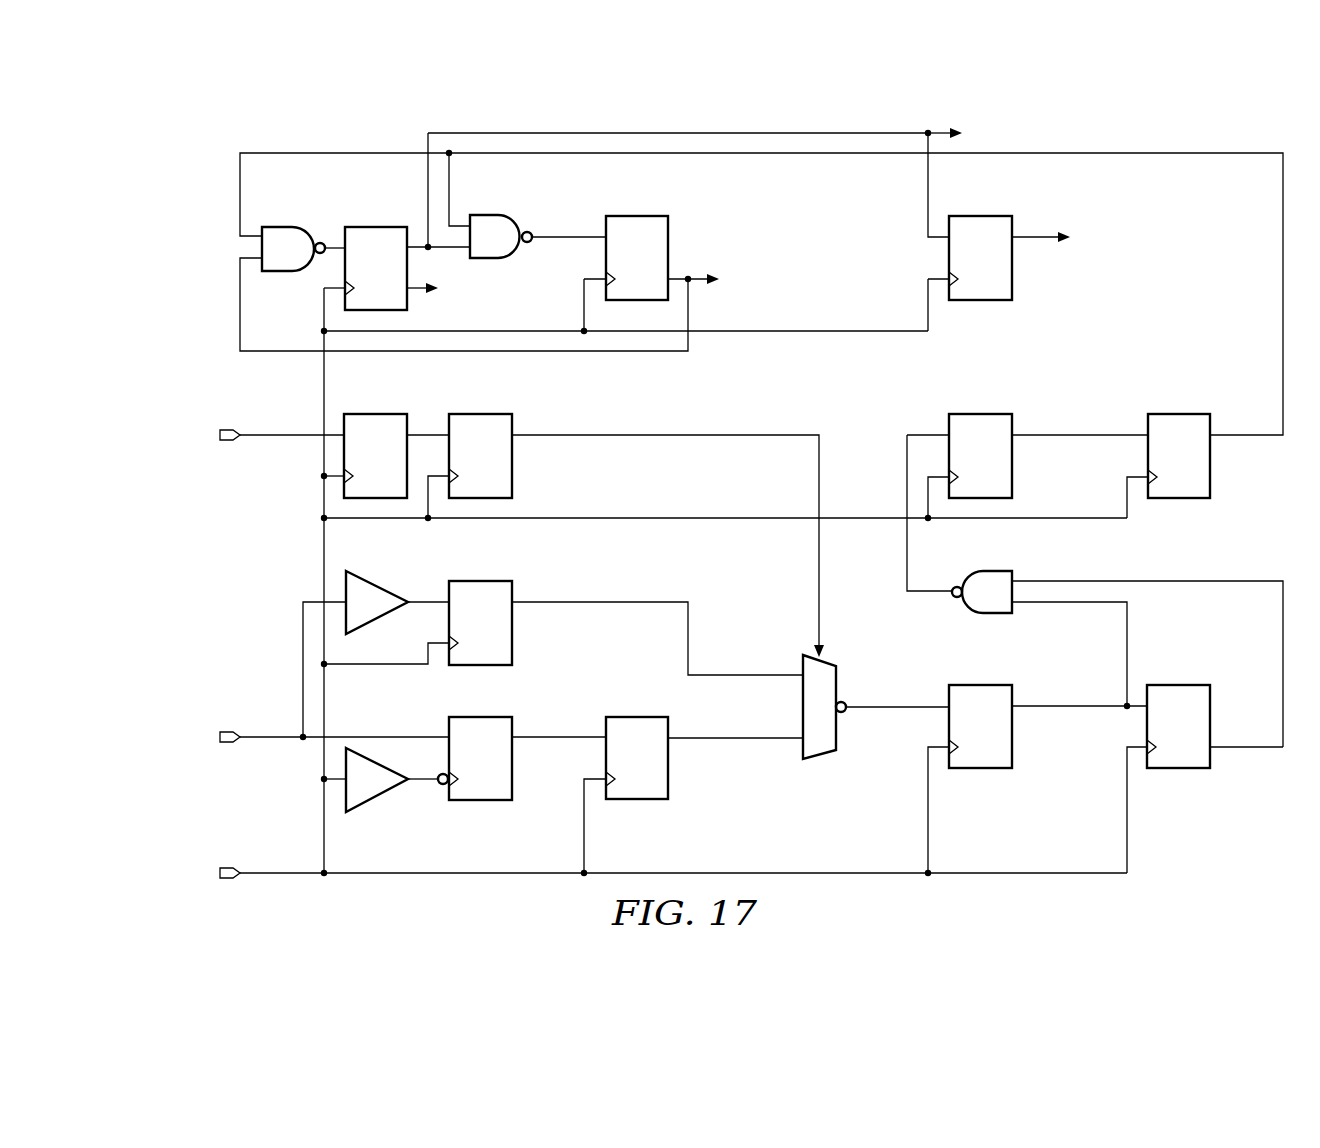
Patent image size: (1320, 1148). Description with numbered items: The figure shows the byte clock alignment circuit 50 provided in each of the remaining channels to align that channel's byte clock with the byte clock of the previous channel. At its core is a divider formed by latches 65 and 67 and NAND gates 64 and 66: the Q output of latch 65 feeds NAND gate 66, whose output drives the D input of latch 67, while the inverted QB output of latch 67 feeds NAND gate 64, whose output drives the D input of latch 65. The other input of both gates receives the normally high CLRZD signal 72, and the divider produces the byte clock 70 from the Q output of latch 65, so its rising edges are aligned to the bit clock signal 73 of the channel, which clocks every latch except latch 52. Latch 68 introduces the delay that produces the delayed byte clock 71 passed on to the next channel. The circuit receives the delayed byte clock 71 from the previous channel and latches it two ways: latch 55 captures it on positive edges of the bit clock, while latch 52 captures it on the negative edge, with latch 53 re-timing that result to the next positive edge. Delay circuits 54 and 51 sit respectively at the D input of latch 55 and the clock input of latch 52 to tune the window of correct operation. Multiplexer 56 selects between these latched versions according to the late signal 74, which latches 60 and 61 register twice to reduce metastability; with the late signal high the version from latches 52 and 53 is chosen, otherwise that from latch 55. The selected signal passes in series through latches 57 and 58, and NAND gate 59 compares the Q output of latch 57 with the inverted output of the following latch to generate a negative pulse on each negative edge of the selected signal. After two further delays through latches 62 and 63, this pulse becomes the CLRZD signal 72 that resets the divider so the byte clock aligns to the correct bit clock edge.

The byte clock alignment circuit 50 is at (176, 295).
The delay circuit 51 is at (377, 797).
The latch 52 is at (480, 800).
The latch 53 is at (638, 800).
The delay circuit 54 is at (380, 587).
The latch 55 is at (480, 581).
The multiplexer 56 is at (820, 759).
The latch 57 is at (978, 769).
The latch 58 is at (1178, 769).
The NAND gate 59 is at (990, 613).
The latch 60 is at (375, 414).
The latch 61 is at (480, 414).
The latch 62 is at (980, 414).
The latch 63 is at (1178, 414).
The NAND gate 64 is at (276, 227).
The latch 65 is at (375, 227).
The NAND gate 66 is at (492, 215).
The latch 67 is at (637, 216).
The latch 68 is at (980, 216).
The byte clock 70 is at (636, 133).
The delayed byte clock 71 is at (1032, 237).
The CLRZD signal 72 is at (340, 153).
The bit clock signal 73 is at (225, 882).
The late signal 74 is at (224, 430).